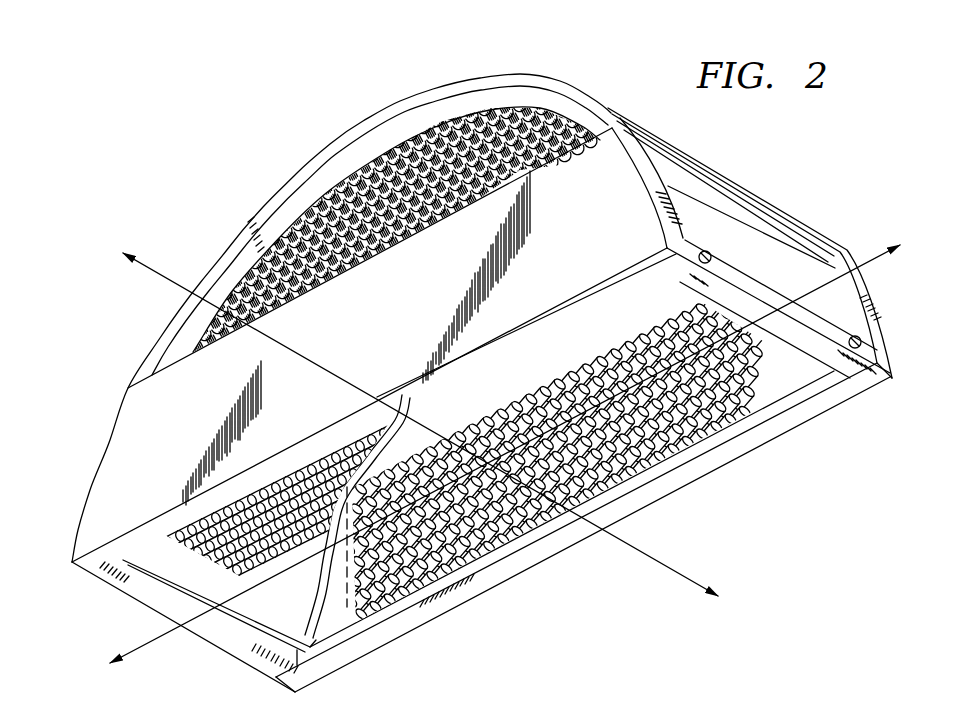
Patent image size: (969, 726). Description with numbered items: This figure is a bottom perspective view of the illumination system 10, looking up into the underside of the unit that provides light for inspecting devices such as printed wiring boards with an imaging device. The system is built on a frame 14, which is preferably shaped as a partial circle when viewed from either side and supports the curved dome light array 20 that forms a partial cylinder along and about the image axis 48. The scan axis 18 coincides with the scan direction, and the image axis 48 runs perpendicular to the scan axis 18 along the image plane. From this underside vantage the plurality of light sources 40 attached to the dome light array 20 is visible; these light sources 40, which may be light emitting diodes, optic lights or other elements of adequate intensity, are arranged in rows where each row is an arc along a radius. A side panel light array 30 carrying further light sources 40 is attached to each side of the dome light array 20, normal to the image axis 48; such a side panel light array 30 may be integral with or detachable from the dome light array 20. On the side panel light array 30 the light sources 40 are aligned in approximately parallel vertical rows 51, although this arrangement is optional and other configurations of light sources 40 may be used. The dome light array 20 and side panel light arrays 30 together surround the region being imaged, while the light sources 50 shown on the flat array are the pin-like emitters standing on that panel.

The illumination system 10 is at (176, 154).
The frame 14 is at (770, 213).
The scan axis 18 is at (867, 256).
The dome light array 20 is at (549, 58).
The side panel light array 30 is at (139, 491).
The light sources 40 is at (351, 160).
The image axis 48 is at (688, 574).
The base pin fins 50 is at (760, 426).
The parallel vertical rows 51 is at (345, 610).